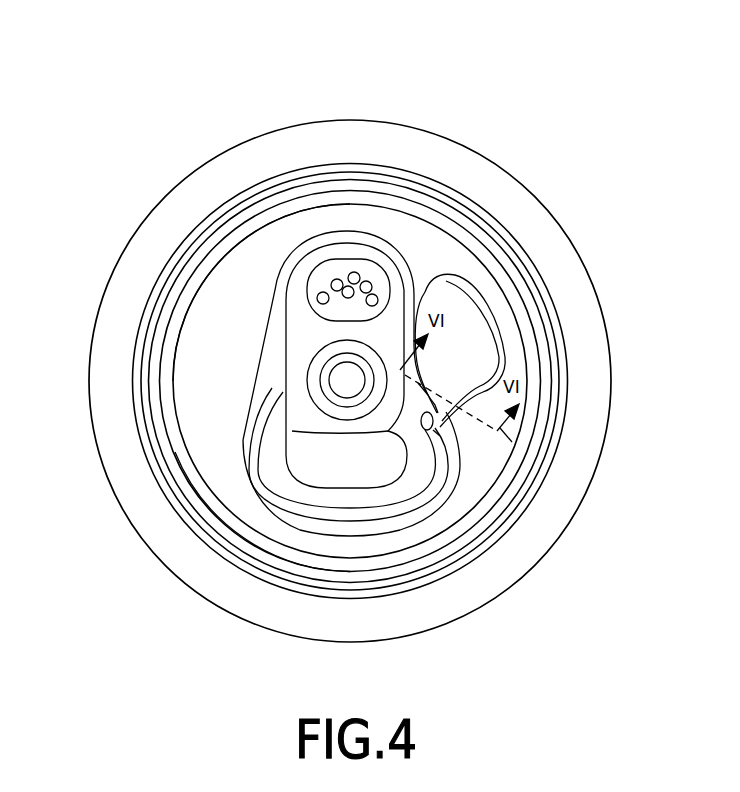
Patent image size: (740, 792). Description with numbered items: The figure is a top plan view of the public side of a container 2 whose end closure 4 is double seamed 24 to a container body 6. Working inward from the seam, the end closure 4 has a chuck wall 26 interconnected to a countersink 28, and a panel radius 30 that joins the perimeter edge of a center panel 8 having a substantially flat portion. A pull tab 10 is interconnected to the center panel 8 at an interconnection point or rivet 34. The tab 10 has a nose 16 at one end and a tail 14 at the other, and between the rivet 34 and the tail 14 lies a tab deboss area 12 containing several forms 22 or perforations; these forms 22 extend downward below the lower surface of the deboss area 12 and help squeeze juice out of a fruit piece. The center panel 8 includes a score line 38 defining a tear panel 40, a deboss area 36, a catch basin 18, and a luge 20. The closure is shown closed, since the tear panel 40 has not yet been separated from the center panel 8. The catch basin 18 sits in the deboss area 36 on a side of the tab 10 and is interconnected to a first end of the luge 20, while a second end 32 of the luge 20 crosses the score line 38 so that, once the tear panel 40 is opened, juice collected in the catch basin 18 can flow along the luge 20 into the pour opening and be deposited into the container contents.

The container 2 is at (527, 108).
The end closure 4 is at (446, 250).
The container body 6 is at (545, 247).
The center panel 8 is at (222, 293).
The pull tab 10 is at (303, 328).
The tab deboss area 12 is at (310, 310).
The tab tail 14 is at (364, 250).
The tab nose 16 is at (287, 481).
The catch basin 18 is at (473, 343).
The luge 20 is at (440, 431).
The forms 22 is at (336, 280).
The double seam 24 is at (452, 565).
The chuck wall 26 is at (510, 510).
The countersink 28 is at (410, 560).
The panel radius 30 is at (300, 563).
The second end of the luge 32 is at (453, 430).
The rivet 34 is at (347, 382).
The deboss area 36 is at (267, 377).
The score line 38 is at (335, 527).
The tear panel 40 is at (325, 505).